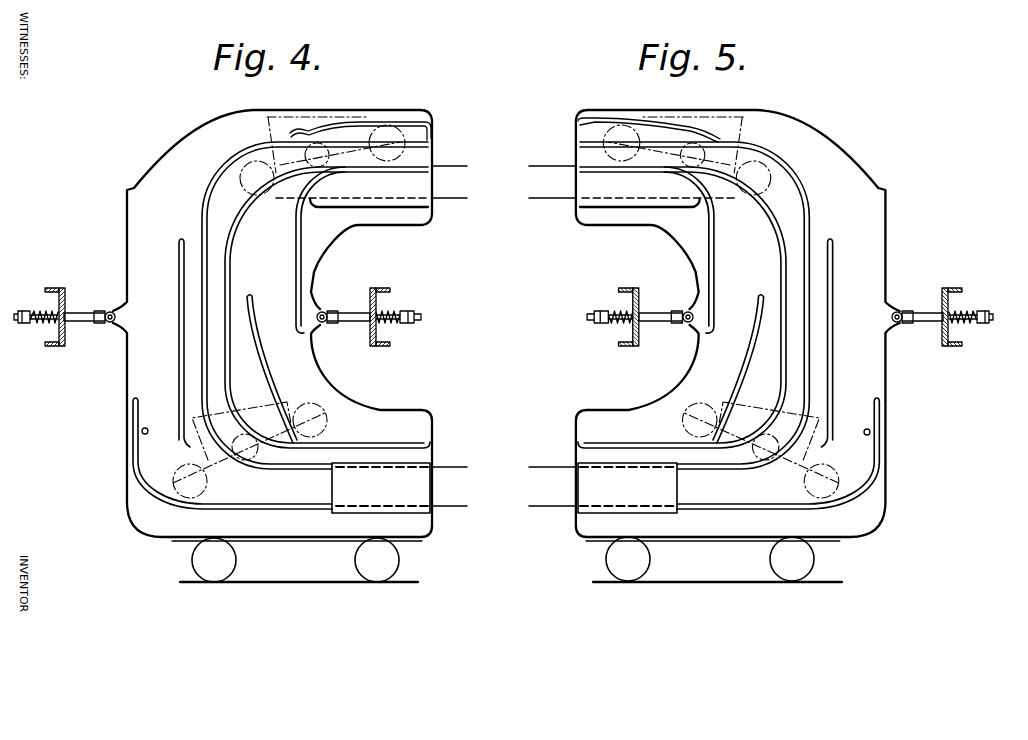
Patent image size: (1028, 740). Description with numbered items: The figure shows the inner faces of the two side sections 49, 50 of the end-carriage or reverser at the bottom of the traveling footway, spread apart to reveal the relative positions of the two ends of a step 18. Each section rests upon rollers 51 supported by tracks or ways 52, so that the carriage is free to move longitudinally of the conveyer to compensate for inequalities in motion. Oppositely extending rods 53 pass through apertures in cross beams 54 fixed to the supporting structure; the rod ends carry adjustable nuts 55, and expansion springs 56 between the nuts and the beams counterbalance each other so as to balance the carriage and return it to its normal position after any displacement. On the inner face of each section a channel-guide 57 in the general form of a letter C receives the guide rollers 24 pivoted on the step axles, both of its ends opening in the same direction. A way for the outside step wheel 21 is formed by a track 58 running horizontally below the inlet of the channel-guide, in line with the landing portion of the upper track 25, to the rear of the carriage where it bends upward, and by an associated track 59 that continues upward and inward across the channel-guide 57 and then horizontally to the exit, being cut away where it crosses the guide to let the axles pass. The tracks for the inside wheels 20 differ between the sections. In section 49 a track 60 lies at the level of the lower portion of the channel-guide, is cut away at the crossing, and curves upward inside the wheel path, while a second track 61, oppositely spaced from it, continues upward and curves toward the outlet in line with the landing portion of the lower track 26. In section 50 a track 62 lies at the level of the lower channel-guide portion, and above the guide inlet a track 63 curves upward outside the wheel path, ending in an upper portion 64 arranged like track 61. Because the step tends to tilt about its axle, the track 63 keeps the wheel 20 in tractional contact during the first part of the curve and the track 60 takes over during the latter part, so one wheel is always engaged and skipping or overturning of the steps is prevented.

In FIG. 4, the steps 18 is at (250, 416).
In FIG. 5, the steps 18 is at (765, 416).
In FIG. 4, the front wheels 20 is at (312, 428).
In FIG. 5, the front wheels 20 is at (683, 406).
In FIG. 4, the rear wheels 21 is at (190, 481).
In FIG. 5, the rear wheels 21 is at (833, 476).
In FIG. 4, the roller 24 is at (248, 468).
In FIG. 5, the roller 24 is at (760, 468).
In FIG. 4, the upper track 25 is at (543, 201).
In FIG. 5, the upper track 25 is at (540, 504).
In FIG. 4, the lower track 26 is at (535, 164).
In FIG. 5, the lower track 26 is at (536, 464).
In FIG. 4, the section 49 is at (132, 202).
In FIG. 5, the section 50 is at (868, 210).
In FIG. 4, the rollers 51 is at (207, 566).
In FIG. 5, the rollers 51 is at (622, 569).
In FIG. 4, the tracks or ways 52 is at (296, 583).
In FIG. 5, the tracks or ways 52 is at (722, 583).
In FIG. 4, the rods 53 is at (78, 324).
In FIG. 5, the rods 53 is at (661, 314).
In FIG. 4, the cross beams 54 is at (50, 347).
In FIG. 5, the cross beams 54 is at (637, 341).
In FIG. 4, the nuts 55 is at (17, 313).
In FIG. 5, the nuts 55 is at (598, 323).
In FIG. 4, the expansion springs 56 is at (40, 312).
In FIG. 5, the expansion springs 56 is at (610, 311).
In FIG. 4, the channel-guide 57 is at (215, 282).
In FIG. 5, the channel-guide 57 is at (797, 281).
In FIG. 4, the track 58 is at (143, 429).
In FIG. 5, the track 58 is at (869, 432).
In FIG. 4, the track 59 is at (277, 200).
In FIG. 5, the track 59 is at (735, 201).
In FIG. 4, the track 60 is at (265, 376).
In FIG. 4, the second track 61 is at (296, 302).
In FIG. 5, the track 62 is at (595, 470).
In FIG. 5, the track 63 is at (713, 369).
In FIG. 5, the upper portion 64 is at (655, 171).